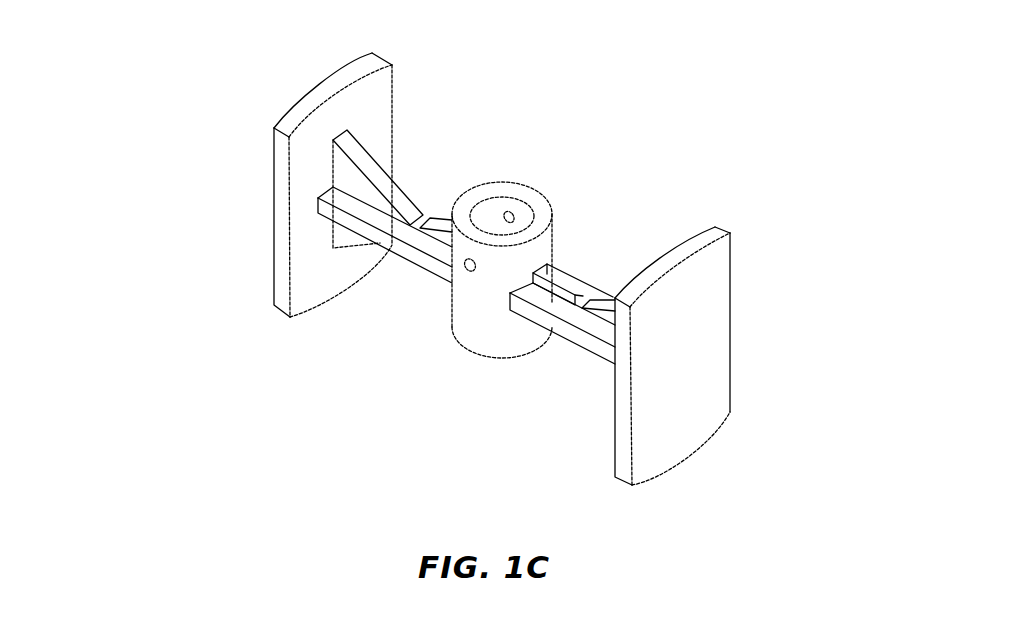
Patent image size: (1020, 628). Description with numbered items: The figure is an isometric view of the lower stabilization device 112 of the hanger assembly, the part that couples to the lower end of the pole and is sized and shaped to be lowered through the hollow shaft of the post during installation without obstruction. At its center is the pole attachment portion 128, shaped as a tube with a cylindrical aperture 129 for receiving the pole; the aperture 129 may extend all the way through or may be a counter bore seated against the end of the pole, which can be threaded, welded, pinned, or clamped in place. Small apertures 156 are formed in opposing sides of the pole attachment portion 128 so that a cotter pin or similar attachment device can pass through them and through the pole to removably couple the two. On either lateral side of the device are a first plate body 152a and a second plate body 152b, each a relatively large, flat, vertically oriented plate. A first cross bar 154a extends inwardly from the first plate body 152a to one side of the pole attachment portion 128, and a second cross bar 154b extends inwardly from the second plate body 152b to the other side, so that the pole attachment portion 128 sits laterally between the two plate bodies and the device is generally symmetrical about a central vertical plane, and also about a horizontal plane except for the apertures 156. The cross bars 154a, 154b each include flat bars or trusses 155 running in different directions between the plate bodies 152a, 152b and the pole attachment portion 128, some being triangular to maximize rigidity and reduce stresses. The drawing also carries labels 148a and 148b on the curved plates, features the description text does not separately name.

The lower stabilization device 112 is at (214, 63).
The first curved plate 148a is at (298, 90).
The second curved plate 148b is at (708, 328).
The first plate body 152a is at (290, 261).
The second plate body 152b is at (707, 352).
The pole attachment portion 128 is at (548, 220).
The cylindrical aperture 129 is at (496, 208).
The apertures 156 is at (508, 216).
The first cross bar 154a is at (380, 224).
The second cross bar 154b is at (566, 330).
The flat bars or trusses 155 is at (449, 220).